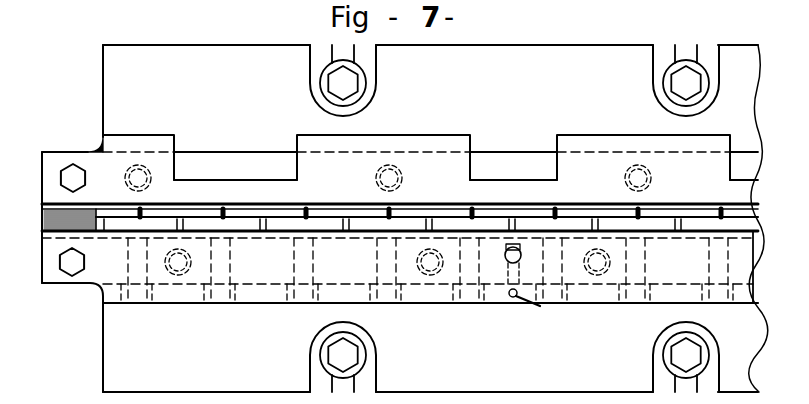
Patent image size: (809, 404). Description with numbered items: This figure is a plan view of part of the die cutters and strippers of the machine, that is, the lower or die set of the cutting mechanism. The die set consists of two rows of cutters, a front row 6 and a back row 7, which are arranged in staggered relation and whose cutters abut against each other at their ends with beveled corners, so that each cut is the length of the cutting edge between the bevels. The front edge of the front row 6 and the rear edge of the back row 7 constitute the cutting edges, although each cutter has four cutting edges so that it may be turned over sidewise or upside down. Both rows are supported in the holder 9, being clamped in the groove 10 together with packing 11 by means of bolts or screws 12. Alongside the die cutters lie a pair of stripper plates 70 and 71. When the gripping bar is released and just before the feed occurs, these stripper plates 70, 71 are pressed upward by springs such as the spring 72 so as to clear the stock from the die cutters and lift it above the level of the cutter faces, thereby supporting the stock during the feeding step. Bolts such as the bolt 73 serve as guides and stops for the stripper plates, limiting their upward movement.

The front row of die cutters 6 is at (753, 226).
The back row of die cutters 7 is at (753, 212).
The holder 9 is at (107, 344).
The groove 10 is at (44, 211).
The packing 11 is at (46, 229).
The bolts or screws 12 is at (300, 300).
The stripper plate 70 is at (436, 305).
The stripper plate 71 is at (428, 146).
The spring 72 is at (179, 272).
The bolt 73 is at (66, 272).